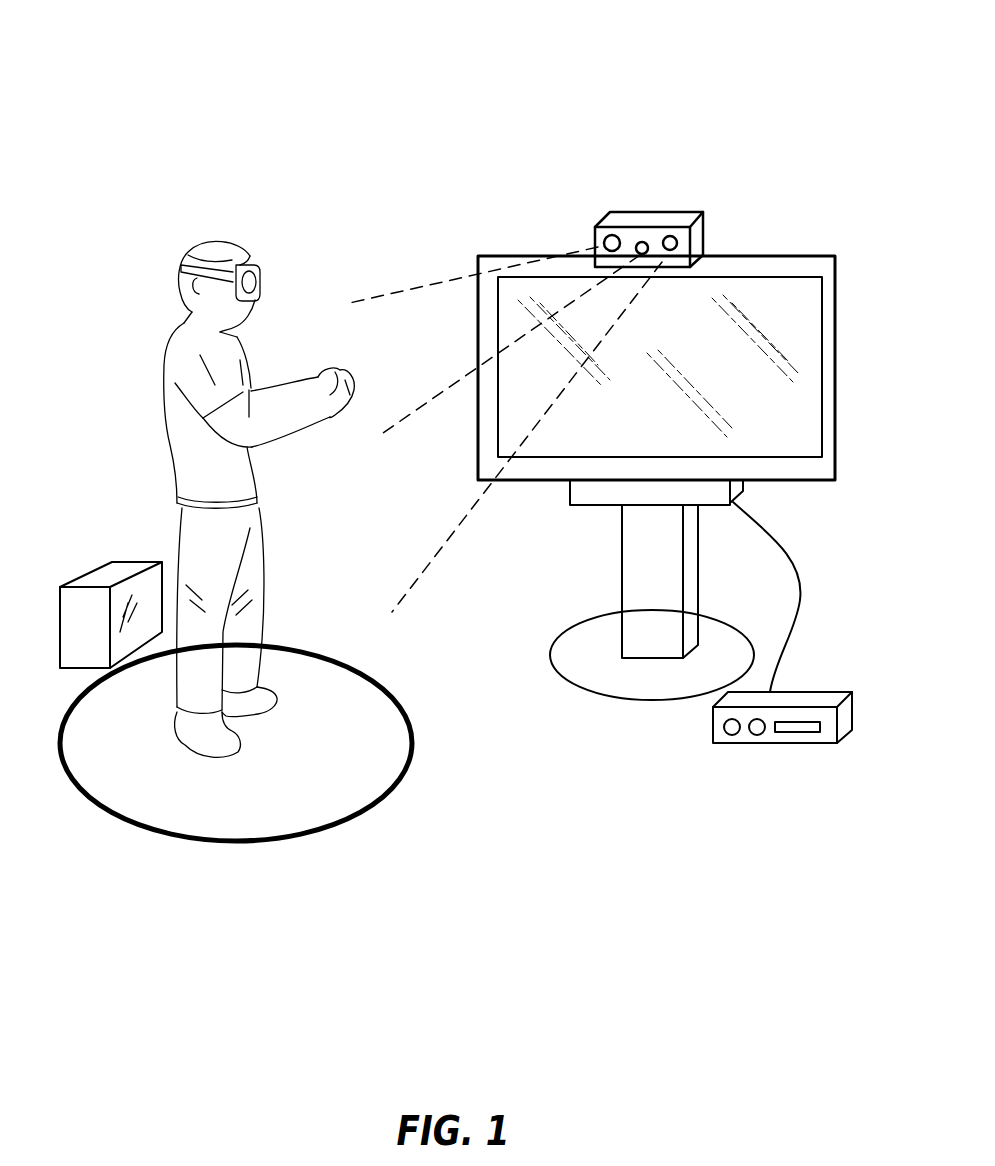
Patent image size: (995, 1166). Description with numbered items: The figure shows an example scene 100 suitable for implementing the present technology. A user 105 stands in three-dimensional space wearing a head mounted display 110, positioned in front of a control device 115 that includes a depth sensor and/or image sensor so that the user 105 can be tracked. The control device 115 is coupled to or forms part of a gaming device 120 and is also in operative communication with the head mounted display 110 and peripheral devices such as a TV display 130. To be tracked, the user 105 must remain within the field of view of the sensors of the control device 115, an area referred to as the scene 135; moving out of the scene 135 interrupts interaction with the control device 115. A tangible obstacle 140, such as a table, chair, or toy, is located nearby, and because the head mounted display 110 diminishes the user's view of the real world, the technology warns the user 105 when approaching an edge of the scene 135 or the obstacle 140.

The example scene 100 is at (773, 84).
The user 105 is at (158, 343).
The head mounted display 110 is at (266, 278).
The control device 115 is at (650, 212).
The gaming device 120 is at (773, 758).
The TV display 130 is at (797, 283).
The scene 135 is at (320, 808).
The tangible obstacle 140 is at (82, 562).